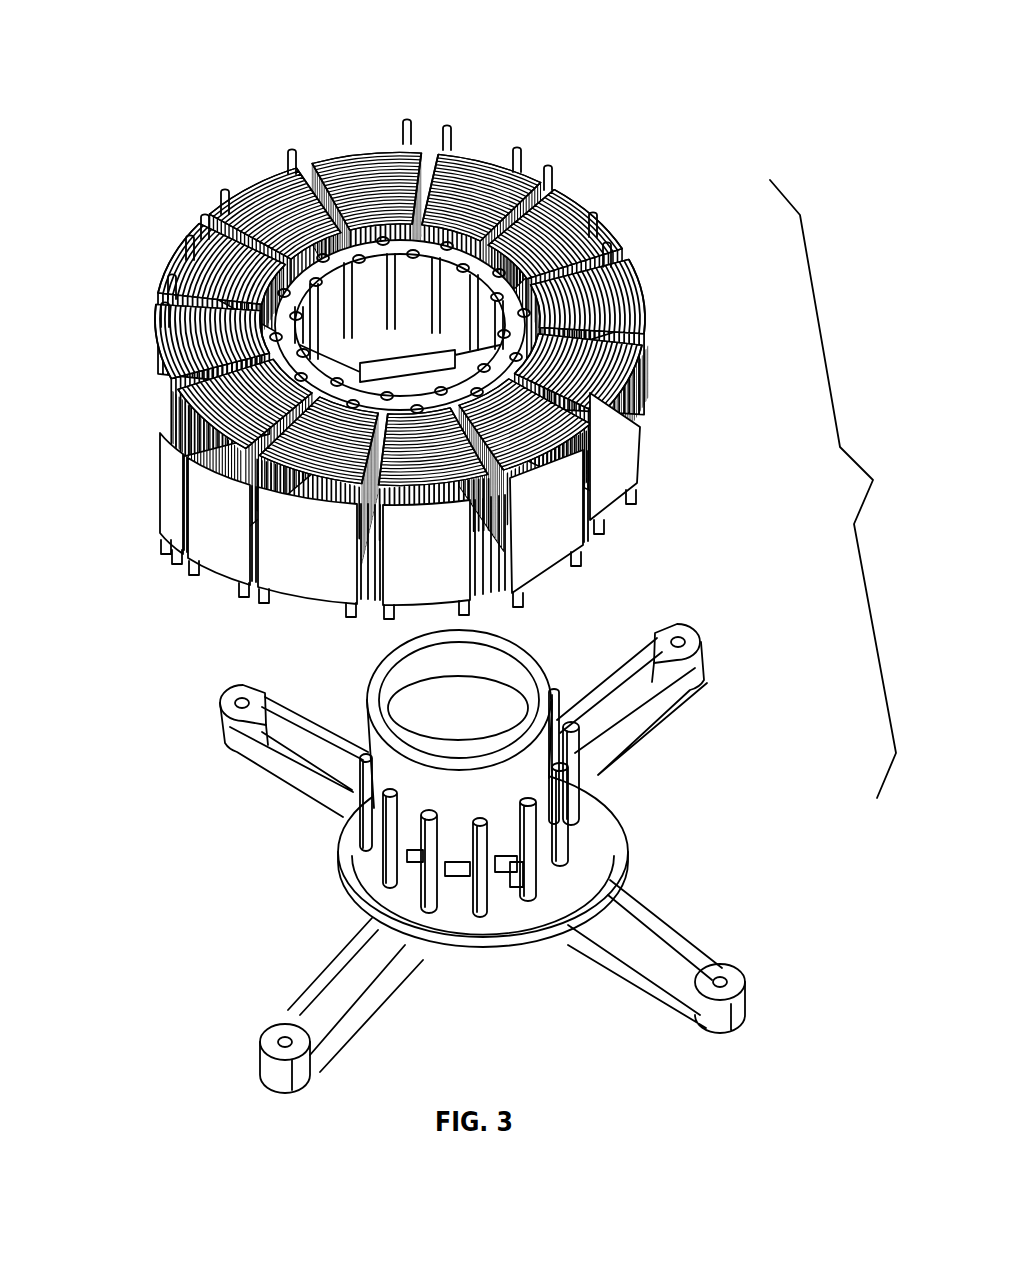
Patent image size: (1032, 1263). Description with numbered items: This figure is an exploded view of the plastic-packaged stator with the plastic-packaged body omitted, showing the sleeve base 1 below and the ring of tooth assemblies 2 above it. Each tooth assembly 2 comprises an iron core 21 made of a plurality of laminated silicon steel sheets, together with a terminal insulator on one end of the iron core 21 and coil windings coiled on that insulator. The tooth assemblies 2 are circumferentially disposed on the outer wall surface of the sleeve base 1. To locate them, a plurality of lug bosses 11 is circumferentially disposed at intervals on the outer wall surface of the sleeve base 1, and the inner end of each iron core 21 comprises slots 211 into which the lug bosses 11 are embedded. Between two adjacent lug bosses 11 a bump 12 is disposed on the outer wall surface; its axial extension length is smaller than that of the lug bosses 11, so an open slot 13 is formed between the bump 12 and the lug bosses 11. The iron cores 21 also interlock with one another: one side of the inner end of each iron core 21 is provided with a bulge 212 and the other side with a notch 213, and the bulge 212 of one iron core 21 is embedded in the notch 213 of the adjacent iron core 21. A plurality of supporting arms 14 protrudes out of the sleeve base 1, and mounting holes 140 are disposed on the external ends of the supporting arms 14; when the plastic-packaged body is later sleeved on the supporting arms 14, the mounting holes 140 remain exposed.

The sleeve base 1 is at (540, 748).
The lug boss 11 is at (528, 827).
The bump 12 is at (520, 900).
The open slot 13 is at (478, 886).
The supporting arm 14 is at (348, 988).
The mounting hole 140 is at (283, 1042).
The tooth assembly 2 is at (638, 263).
The iron core 21 is at (220, 507).
The slot 211 is at (303, 307).
The bulge 212 is at (603, 377).
The notch 213 is at (362, 133).